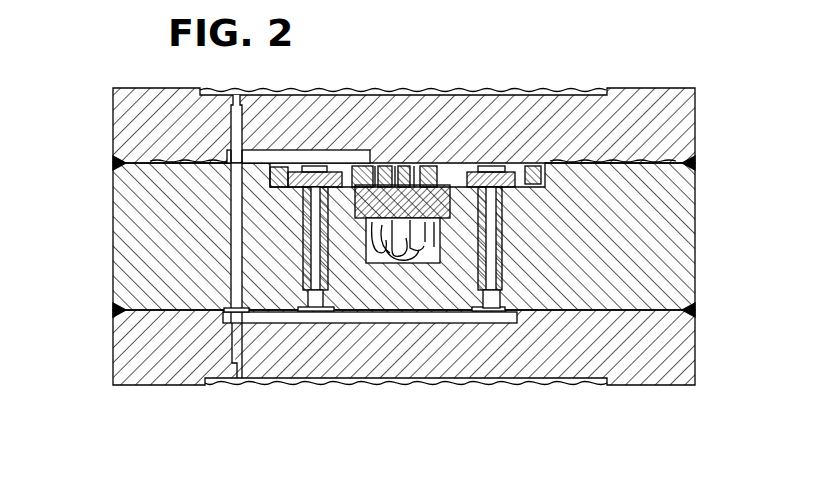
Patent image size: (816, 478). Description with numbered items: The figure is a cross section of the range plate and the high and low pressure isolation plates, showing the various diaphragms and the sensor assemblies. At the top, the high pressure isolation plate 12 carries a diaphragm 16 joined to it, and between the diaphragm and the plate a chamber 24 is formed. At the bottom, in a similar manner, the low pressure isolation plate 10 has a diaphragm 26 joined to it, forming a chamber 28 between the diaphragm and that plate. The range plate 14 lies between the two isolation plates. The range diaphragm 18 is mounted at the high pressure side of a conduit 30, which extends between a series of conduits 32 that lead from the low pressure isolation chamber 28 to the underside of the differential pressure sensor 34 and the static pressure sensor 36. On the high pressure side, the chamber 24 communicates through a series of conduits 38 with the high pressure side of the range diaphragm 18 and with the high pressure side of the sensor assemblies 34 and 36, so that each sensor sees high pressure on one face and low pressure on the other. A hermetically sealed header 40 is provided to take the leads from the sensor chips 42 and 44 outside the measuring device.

The low pressure isolation plate 10 is at (125, 367).
The high pressure isolation plate 12 is at (120, 135).
The intermediate plate 14 is at (678, 256).
The diaphragm 16 is at (486, 162).
The range diaphragm 18 is at (240, 130).
The chamber 24 is at (370, 150).
The diaphragm 26 is at (473, 383).
The chamber 28 is at (373, 381).
The conduit 30 is at (233, 212).
The conduits 32 is at (282, 318).
The differential pressure sensor 34 is at (303, 255).
The static pressure sensor 36 is at (502, 247).
The conduits 38 is at (277, 157).
The hermetically sealed header 40 is at (485, 314).
The sensor chip 42 is at (398, 100).
The sensor chip 44 is at (487, 160).